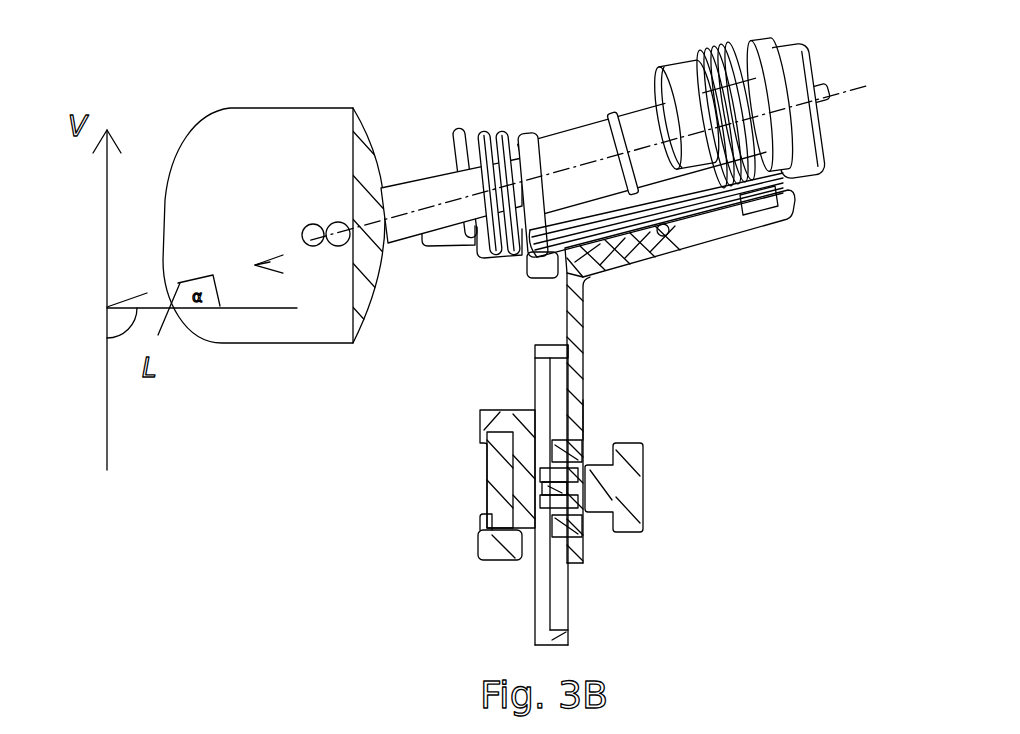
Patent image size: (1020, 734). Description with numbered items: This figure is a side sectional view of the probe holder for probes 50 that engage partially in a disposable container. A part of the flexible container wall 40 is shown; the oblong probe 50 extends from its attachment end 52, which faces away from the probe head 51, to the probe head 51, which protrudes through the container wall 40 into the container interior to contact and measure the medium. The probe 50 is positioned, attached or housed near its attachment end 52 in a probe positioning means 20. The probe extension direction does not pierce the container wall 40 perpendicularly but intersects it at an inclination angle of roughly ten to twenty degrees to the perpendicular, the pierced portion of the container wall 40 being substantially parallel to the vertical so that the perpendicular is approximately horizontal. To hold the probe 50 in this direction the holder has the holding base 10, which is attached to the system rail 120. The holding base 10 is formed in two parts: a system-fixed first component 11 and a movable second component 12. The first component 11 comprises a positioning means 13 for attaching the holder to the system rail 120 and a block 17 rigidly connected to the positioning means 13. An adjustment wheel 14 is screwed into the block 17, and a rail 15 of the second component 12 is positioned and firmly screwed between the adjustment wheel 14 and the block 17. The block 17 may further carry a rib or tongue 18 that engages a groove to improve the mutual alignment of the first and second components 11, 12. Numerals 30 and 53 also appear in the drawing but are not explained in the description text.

The holding base 10 is at (575, 305).
The first component 11 is at (541, 609).
The second component 12 is at (580, 388).
The positioning means 13 is at (492, 527).
The adjustment wheel 14 is at (632, 490).
The rail 15 is at (583, 417).
The block 17 is at (543, 393).
The rib or tongue 18 is at (577, 545).
The probe positioning means 20 is at (790, 189).
The pivot 30 is at (667, 234).
The container wall 40 is at (280, 116).
The probe 50 is at (425, 171).
The probe head 51 is at (336, 222).
The attachment end 52 is at (808, 90).
The axis 53 is at (260, 248).
The system rail 120 is at (500, 468).